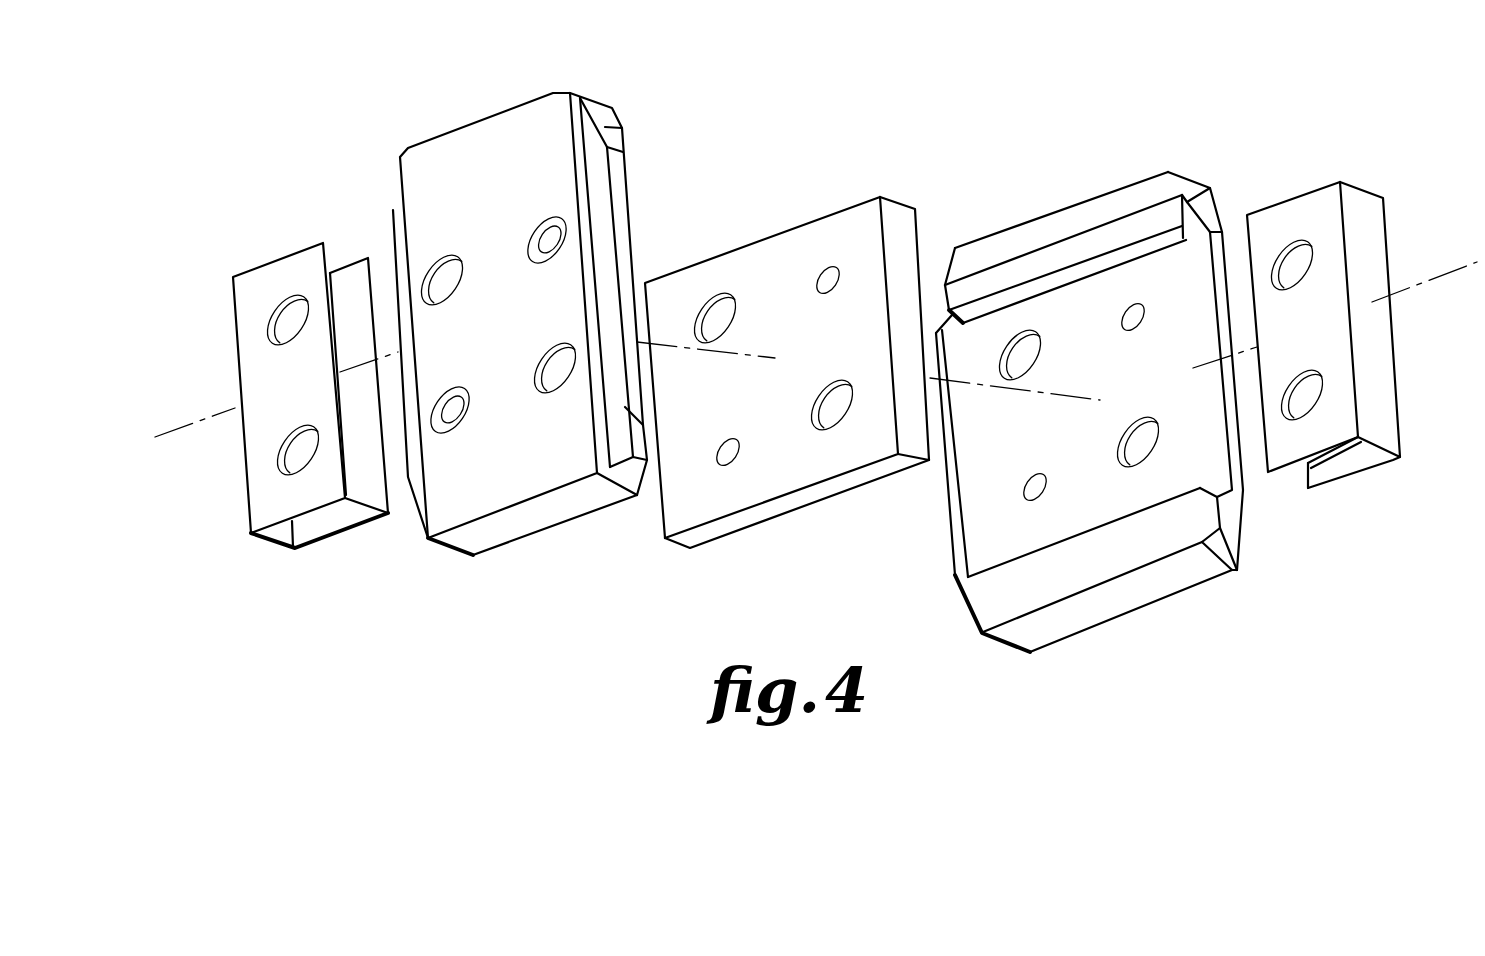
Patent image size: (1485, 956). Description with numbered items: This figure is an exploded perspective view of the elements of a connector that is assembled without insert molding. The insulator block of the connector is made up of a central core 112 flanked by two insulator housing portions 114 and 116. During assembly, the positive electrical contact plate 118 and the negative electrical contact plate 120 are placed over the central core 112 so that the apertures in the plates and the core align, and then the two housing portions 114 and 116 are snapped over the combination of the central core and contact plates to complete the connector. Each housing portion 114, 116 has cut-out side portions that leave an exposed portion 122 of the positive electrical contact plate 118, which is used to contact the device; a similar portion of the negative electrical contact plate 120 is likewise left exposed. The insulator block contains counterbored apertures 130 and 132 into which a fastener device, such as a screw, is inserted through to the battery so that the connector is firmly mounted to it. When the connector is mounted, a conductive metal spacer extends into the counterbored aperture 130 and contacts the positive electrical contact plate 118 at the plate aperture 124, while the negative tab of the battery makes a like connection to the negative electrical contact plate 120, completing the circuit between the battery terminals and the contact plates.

The central core 112 is at (799, 254).
The insulator housing portion 114 is at (1025, 265).
The insulator housing portion 116 is at (482, 143).
The positive electrical contact plate 118 is at (1359, 288).
The negative electrical contact plate 120 is at (260, 280).
The exposed portion 122 is at (1382, 243).
The plate aperture 124 is at (1307, 392).
The counterbored aperture 130 is at (437, 278).
The counterbored aperture 132 is at (557, 387).